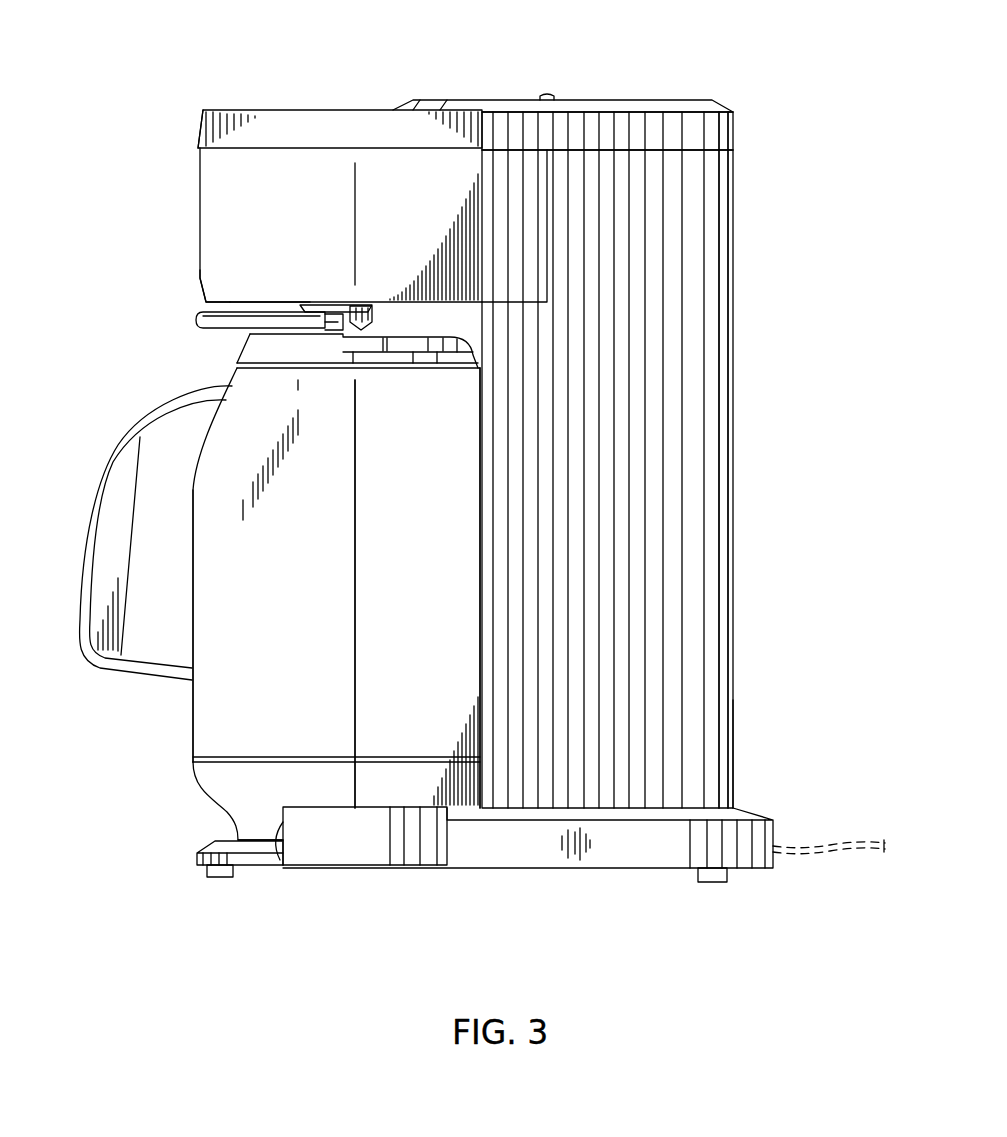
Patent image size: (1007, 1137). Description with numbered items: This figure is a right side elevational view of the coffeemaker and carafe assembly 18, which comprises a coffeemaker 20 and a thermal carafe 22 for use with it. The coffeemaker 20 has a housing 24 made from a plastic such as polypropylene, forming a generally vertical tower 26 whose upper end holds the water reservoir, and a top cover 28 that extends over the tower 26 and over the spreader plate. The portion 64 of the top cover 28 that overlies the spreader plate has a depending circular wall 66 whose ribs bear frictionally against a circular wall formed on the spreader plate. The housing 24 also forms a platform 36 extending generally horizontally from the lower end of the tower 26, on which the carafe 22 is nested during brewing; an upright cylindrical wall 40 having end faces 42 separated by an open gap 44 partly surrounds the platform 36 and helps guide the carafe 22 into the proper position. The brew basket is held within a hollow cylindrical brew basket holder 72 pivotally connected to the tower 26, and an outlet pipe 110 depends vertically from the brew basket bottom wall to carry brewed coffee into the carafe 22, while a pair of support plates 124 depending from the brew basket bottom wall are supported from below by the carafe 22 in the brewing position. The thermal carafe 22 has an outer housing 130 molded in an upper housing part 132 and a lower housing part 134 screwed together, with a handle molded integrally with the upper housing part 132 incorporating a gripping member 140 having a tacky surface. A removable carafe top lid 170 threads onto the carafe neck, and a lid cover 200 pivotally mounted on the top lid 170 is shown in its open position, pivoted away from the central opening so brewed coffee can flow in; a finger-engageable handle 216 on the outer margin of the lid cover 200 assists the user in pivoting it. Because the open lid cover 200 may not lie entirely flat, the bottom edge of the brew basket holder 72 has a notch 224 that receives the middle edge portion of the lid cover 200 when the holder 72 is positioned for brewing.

The coffeemaker and carafe assembly 18 is at (446, 80).
The coffeemaker 20 is at (738, 258).
The thermal carafe 22 is at (190, 723).
The housing 24 is at (740, 770).
The tower 26 is at (720, 398).
The top cover 28 is at (677, 122).
The platform 36 is at (492, 848).
The cylindrical wall 40 is at (346, 852).
The end faces 42 is at (269, 866).
The open gap 44 is at (224, 826).
The portion of the top cover 64 is at (281, 110).
The depending circular wall 66 is at (203, 122).
The brew basket holder 72 is at (197, 186).
The outlet pipe 110 is at (373, 305).
The support plates 124 is at (298, 305).
The outer housing 130 is at (238, 424).
The upper housing part 132 is at (418, 597).
The lower housing part 134 is at (121, 451).
The gripping member 140 is at (114, 504).
The carafe top lid 170 is at (236, 348).
The lid cover 200 is at (243, 316).
The finger-engageable handle 216 is at (195, 317).
The notch 224 is at (201, 290).